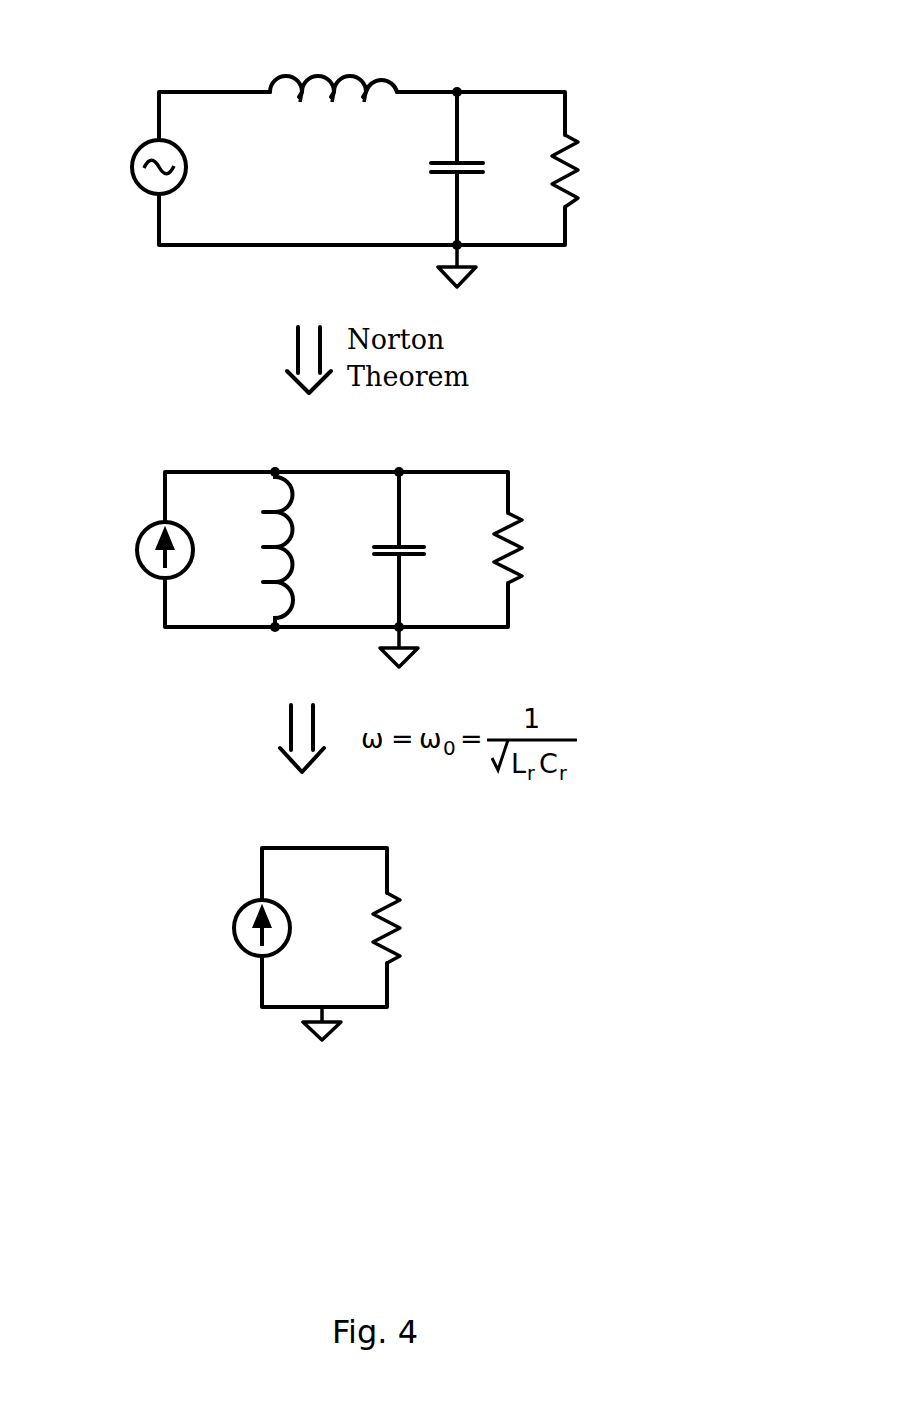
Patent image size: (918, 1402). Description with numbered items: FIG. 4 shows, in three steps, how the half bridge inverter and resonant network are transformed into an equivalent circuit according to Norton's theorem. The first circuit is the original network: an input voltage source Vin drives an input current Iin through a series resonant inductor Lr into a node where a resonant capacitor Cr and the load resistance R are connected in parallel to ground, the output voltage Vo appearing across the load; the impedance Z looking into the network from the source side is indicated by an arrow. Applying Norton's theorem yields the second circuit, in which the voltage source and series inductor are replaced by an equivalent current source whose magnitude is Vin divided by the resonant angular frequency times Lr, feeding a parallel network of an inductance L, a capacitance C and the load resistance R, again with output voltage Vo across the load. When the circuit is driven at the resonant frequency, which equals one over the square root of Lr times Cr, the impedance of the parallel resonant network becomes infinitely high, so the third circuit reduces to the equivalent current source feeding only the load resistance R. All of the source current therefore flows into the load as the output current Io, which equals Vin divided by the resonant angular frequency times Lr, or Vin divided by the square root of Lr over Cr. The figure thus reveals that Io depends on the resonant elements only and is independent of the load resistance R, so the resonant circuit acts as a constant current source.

The input voltage Vin is at (212, 928).
The input current Iin is at (226, 77).
The resonant inductor Lr is at (333, 70).
The resonant capacitor Cr is at (474, 168).
The load resistance R is at (488, 552).
The output voltage Vo is at (485, 980).
The impedance Z is at (228, 280).
The inductance of the Norton equivalent parallel network L is at (291, 549).
The capacitance of the Norton equivalent parallel network C is at (410, 549).
The output current Io is at (418, 830).